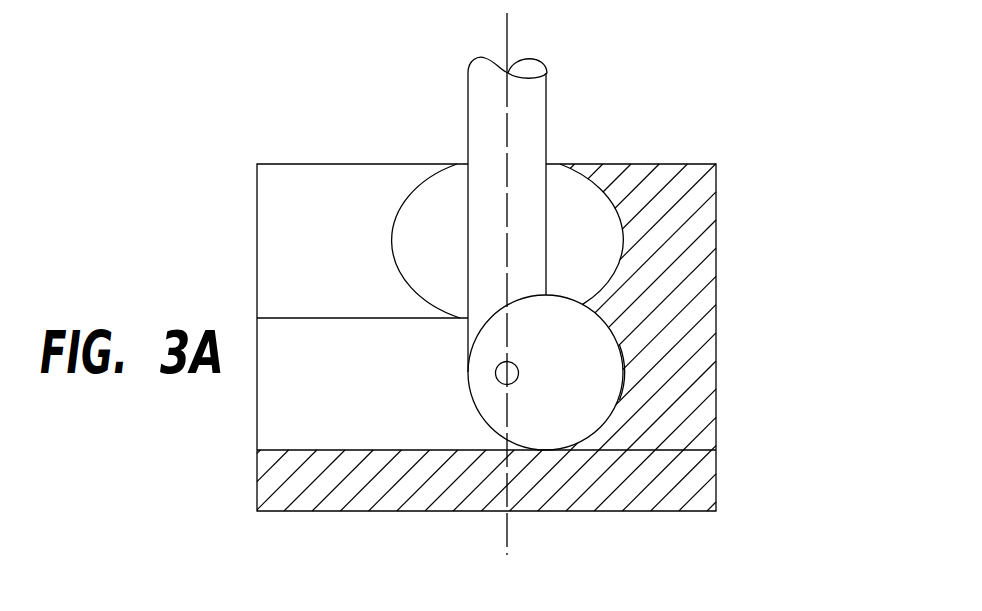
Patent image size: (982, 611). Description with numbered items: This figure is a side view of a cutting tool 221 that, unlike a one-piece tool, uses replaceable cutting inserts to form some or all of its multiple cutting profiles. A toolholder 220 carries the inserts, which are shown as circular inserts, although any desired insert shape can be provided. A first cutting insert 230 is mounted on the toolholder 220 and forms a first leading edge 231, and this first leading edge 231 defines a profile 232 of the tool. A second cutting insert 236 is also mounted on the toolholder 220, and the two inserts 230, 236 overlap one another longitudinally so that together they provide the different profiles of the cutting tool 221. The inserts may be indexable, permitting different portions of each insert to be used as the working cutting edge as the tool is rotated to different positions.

The cutting tool 221 is at (567, 284).
The toolholder 220 is at (546, 125).
The second cutting insert 236 is at (428, 204).
The profile 232 is at (622, 353).
The first leading edge 231 is at (632, 381).
The first cutting insert 230 is at (582, 408).